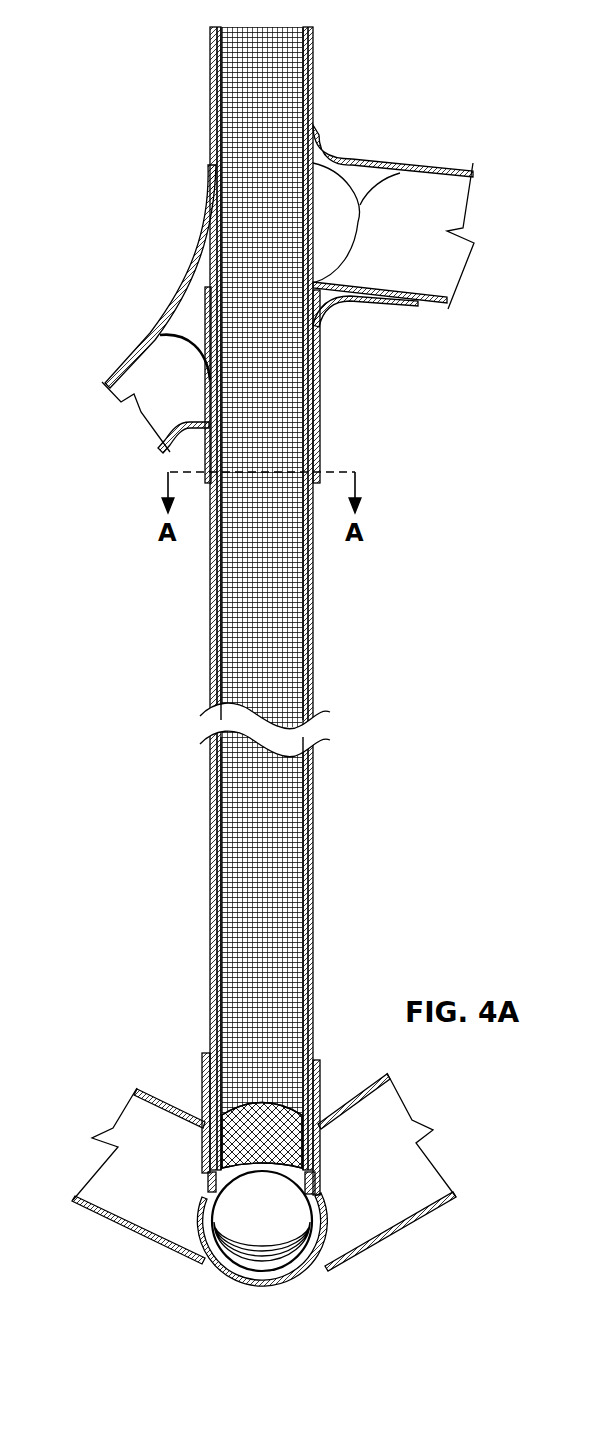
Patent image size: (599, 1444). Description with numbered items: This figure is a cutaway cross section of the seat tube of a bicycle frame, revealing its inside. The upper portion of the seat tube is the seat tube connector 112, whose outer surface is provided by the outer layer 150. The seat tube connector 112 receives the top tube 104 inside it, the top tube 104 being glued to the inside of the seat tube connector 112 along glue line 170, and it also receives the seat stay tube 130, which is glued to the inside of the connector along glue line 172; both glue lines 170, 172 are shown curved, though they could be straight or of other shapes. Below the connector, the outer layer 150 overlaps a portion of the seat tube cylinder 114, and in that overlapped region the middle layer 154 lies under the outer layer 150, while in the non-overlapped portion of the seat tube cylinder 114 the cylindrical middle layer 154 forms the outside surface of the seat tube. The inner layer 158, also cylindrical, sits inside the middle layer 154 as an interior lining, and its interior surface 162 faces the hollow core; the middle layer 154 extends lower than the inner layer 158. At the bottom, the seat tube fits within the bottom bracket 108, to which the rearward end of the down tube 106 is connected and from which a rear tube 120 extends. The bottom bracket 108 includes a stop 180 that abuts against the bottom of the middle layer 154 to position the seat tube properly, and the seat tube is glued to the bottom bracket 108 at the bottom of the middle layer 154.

The top tube 104 is at (465, 211).
The down tube 106 is at (380, 1234).
The bottom bracket 108 is at (250, 1283).
The seat tube connector 112 is at (310, 58).
The seat tube cylinder 114 is at (313, 845).
The chain stay 120 is at (155, 1236).
The seat stay tube 130 is at (122, 401).
The outer layer 150 is at (212, 100).
The middle layer 154 is at (313, 592).
The inner layer 158 is at (215, 45).
The interior surface 162 is at (290, 415).
The glue line 170 is at (400, 173).
The glue line 172 is at (185, 337).
The stop 180 is at (208, 1182).